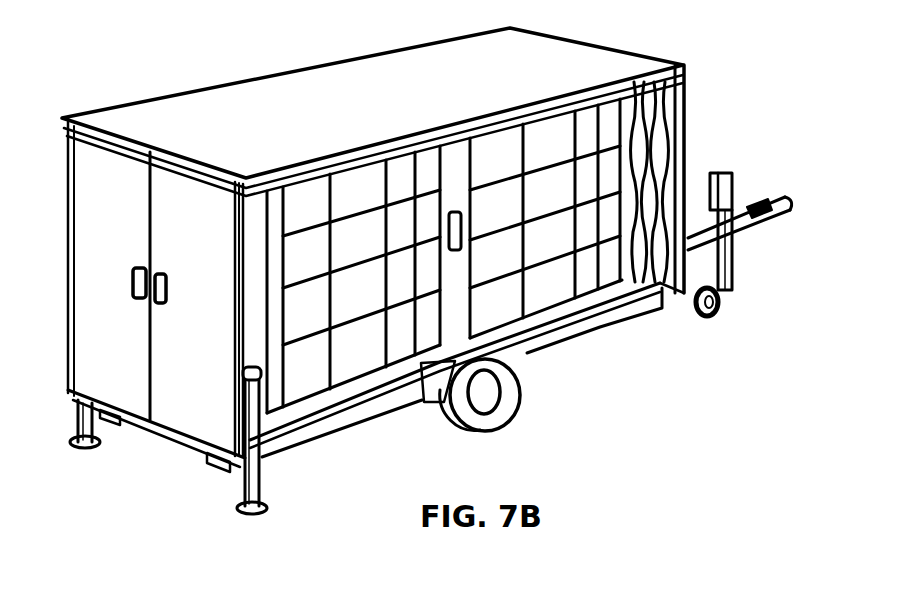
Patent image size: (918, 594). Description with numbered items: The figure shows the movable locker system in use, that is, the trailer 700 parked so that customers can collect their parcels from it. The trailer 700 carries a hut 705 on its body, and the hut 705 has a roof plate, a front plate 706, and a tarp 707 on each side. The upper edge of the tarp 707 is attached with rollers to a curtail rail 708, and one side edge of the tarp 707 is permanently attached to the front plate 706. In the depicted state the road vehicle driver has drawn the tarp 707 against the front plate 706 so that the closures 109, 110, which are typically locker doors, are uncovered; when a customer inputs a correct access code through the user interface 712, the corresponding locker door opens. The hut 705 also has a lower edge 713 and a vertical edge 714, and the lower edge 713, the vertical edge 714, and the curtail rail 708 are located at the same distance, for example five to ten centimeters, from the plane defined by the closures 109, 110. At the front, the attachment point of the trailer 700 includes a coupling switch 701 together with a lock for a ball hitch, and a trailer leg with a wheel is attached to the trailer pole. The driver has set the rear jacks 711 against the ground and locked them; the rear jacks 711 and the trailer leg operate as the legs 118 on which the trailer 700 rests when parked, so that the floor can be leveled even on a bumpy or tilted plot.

The trailer 700 is at (372, 250).
The hut 705 is at (175, 97).
The first closure 109 is at (353, 264).
The second closure 110 is at (353, 203).
The user interface 712 is at (458, 212).
The curtail rail 708 is at (526, 108).
The tarp 707 is at (643, 83).
The front plate 706 is at (688, 88).
The vertical edge 714 is at (273, 325).
The lower edge 713 is at (600, 327).
The coupling switch 701 is at (790, 215).
The legs 118 is at (713, 315).
The rear jacks 711 is at (87, 445).